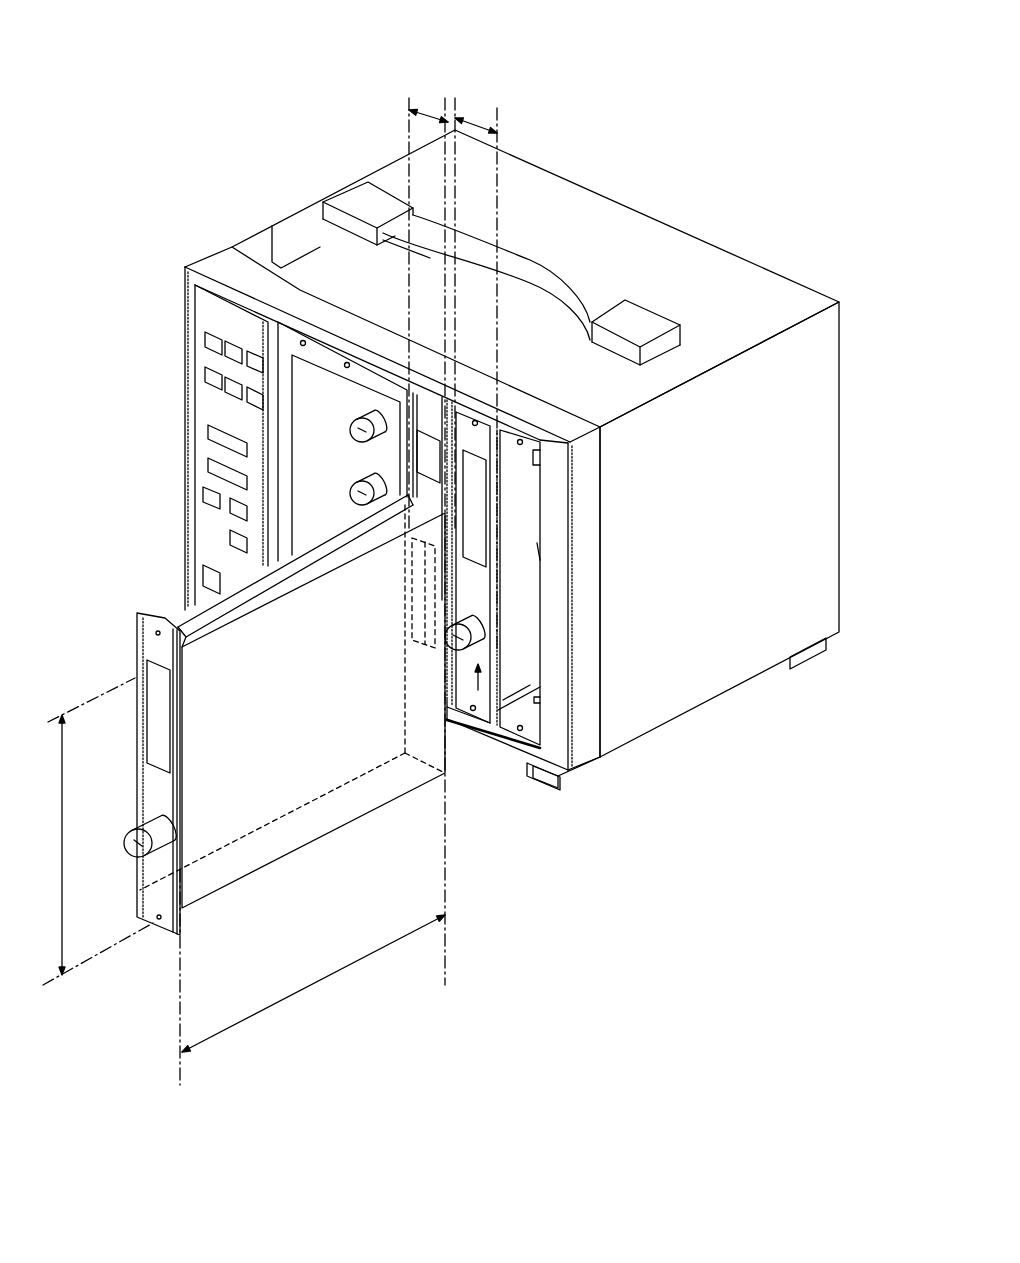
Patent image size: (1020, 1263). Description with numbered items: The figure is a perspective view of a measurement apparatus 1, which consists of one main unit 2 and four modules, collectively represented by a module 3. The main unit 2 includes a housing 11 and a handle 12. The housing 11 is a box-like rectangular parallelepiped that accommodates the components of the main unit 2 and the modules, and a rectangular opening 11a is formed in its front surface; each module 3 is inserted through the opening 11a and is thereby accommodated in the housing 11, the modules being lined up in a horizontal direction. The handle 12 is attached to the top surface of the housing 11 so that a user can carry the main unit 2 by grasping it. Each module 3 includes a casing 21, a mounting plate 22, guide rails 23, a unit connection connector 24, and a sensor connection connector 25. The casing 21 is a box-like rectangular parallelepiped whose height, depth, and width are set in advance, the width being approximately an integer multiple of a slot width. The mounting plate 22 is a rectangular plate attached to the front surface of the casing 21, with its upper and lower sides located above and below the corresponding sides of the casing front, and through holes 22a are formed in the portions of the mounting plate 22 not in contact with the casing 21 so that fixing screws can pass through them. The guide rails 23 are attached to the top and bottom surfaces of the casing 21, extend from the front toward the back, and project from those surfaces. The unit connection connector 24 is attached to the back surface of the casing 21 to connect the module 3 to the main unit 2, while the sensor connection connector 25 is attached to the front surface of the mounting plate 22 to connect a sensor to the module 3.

The measurement apparatus 1 is at (607, 117).
The main unit 2 is at (662, 245).
The module 3 is at (415, 467).
The housing 11 is at (302, 228).
The rectangular opening 11a is at (540, 543).
The handle 12 is at (507, 257).
The casing 21 is at (337, 802).
The mounting plate 22 is at (273, 348).
The through holes 22a is at (158, 626).
The guide rails 23 is at (178, 626).
The unit connection connector 24 is at (424, 650).
The sensor connection connector 25 is at (357, 420).